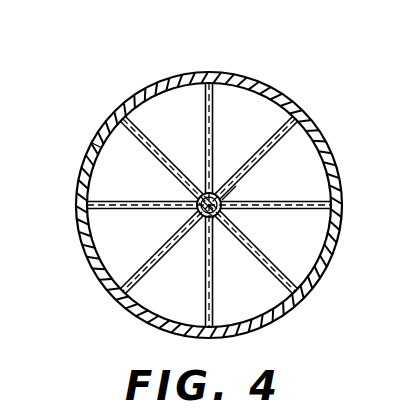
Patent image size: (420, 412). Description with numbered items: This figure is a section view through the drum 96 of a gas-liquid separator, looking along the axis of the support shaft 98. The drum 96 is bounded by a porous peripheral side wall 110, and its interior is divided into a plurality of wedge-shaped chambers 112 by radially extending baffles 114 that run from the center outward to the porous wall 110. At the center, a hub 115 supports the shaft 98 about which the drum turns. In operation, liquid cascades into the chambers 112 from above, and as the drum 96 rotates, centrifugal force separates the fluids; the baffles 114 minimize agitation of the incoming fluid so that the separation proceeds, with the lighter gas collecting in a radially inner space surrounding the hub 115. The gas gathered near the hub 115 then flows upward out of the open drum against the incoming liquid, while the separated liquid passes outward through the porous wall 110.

The drum 96 is at (276, 79).
The support shaft 98 is at (214, 226).
The porous peripheral side wall 110 is at (318, 118).
The wedge-shaped chambers 112 is at (95, 143).
The radially extending baffles 114 is at (192, 110).
The hub 115 is at (232, 190).